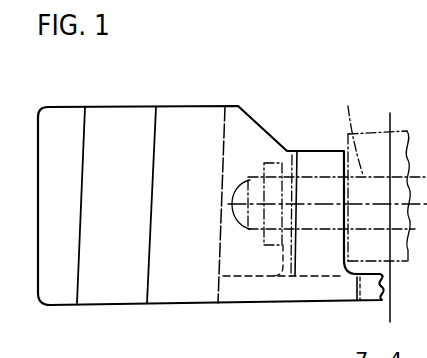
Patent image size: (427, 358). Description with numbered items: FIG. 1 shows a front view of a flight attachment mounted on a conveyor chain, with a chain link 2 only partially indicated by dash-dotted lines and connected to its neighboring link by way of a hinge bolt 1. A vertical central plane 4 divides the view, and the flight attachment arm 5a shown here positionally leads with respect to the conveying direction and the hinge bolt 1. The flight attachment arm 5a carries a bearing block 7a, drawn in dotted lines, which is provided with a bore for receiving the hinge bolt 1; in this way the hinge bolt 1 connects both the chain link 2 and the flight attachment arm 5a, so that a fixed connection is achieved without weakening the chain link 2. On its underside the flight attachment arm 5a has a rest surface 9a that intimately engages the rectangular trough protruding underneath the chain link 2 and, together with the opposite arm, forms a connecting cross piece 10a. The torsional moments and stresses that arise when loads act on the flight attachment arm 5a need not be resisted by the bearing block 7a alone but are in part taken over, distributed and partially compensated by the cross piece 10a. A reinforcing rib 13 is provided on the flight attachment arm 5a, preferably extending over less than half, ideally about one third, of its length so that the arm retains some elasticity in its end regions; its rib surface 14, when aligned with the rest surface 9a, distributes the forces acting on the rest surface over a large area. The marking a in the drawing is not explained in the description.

The tube bearing assembly 1 is at (352, 130).
The mating member 2 is at (373, 132).
The reference line / wall 4 is at (393, 308).
The body housing 5a is at (191, 118).
The pin 7a is at (297, 160).
The partition wall 9a is at (146, 303).
The flange step 10a is at (372, 292).
The seal member 13 is at (223, 277).
The groove line 14 is at (317, 302).
The axis / nose point a is at (236, 229).